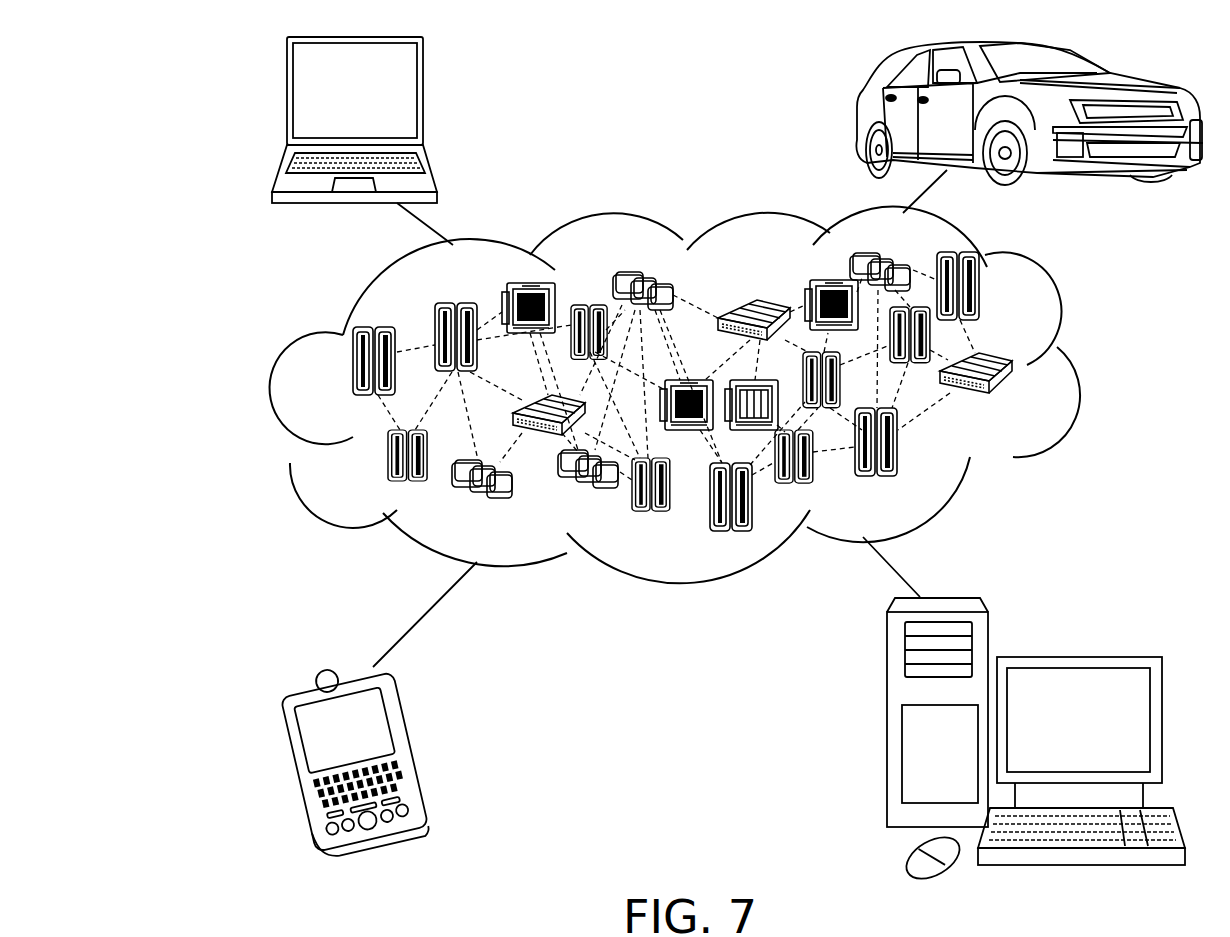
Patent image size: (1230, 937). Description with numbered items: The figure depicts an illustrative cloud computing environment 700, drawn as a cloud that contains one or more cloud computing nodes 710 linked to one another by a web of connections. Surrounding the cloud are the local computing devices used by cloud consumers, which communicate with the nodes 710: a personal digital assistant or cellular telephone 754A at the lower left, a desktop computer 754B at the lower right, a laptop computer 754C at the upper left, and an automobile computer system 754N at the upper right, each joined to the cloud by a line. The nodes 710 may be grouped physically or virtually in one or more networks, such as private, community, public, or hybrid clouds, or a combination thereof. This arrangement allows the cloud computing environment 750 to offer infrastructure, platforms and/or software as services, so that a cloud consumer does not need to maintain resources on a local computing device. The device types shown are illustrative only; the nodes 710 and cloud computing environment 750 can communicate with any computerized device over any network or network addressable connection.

The cloud computing environment 700 is at (121, 66).
The cloud computing environment 750 is at (1083, 370).
The cloud computing nodes 710 is at (1022, 400).
The personal digital assistant or cellular telephone 754A is at (413, 750).
The desktop computer 754B is at (1074, 657).
The laptop computer 754C is at (424, 100).
The automobile computer system 754N is at (860, 118).